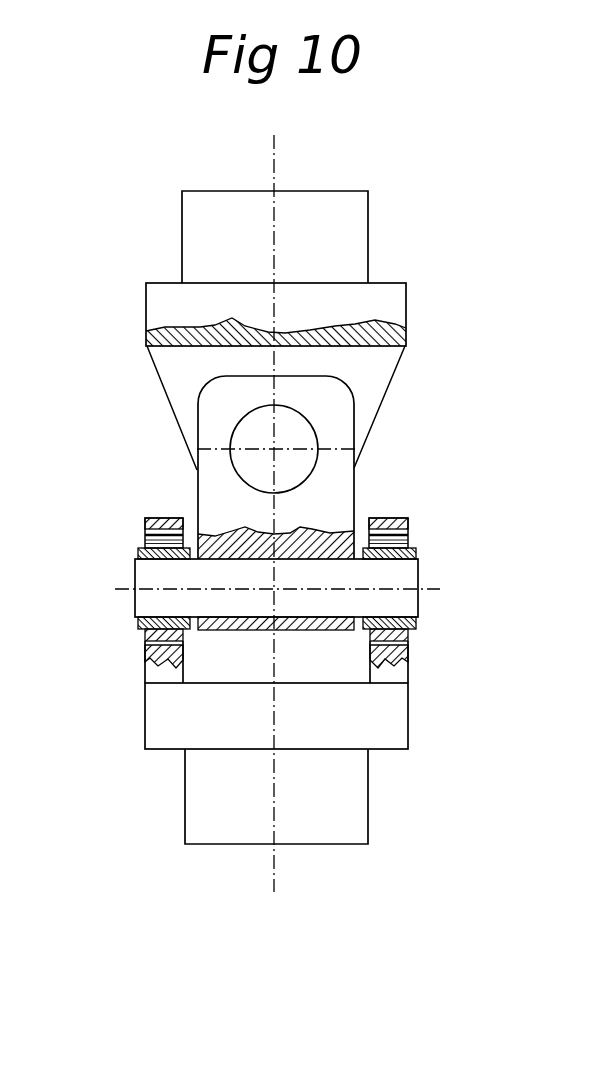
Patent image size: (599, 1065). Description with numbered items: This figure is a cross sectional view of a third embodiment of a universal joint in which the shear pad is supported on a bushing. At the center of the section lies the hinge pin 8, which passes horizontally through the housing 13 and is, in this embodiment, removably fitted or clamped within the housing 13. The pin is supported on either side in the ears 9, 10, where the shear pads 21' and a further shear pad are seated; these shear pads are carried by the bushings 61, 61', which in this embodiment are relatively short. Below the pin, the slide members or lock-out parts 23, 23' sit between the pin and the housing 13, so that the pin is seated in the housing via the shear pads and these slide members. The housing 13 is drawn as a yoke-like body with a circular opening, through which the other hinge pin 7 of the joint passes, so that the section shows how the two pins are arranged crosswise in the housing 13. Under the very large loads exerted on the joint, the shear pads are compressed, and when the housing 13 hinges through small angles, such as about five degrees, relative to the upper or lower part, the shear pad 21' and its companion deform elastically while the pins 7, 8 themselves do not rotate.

The hinge pin 7 is at (250, 458).
The hinge pin 8 is at (148, 574).
The ear 9 is at (145, 517).
The ear 10 is at (393, 518).
The housing 13 is at (330, 497).
The shear pad 21' is at (416, 531).
The slide member or lock-out part 23 is at (412, 656).
The slide member or lock-out part 23' is at (134, 654).
The bushing 61 is at (417, 632).
The bushing 61' is at (118, 633).